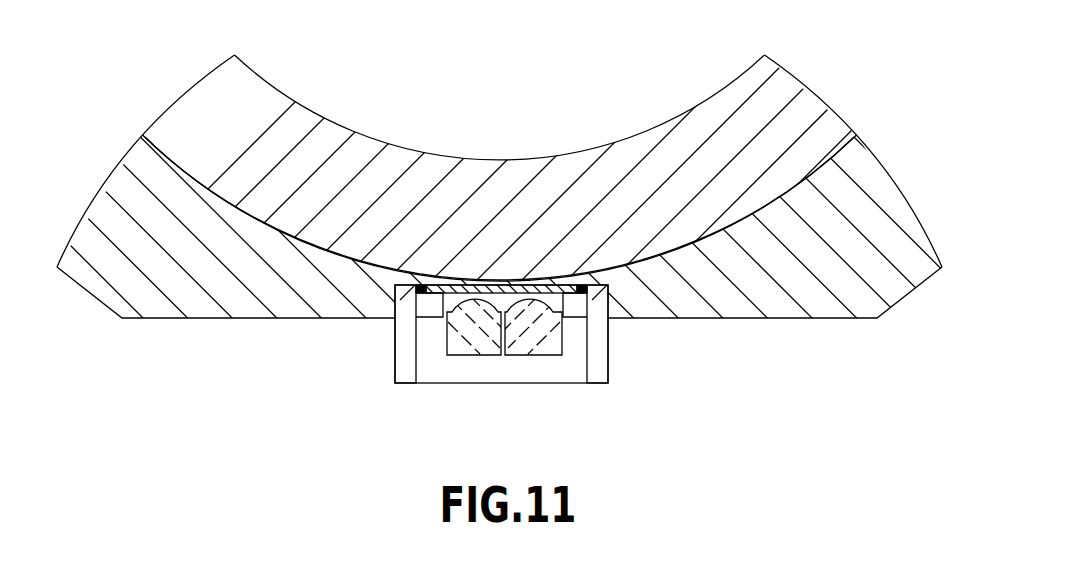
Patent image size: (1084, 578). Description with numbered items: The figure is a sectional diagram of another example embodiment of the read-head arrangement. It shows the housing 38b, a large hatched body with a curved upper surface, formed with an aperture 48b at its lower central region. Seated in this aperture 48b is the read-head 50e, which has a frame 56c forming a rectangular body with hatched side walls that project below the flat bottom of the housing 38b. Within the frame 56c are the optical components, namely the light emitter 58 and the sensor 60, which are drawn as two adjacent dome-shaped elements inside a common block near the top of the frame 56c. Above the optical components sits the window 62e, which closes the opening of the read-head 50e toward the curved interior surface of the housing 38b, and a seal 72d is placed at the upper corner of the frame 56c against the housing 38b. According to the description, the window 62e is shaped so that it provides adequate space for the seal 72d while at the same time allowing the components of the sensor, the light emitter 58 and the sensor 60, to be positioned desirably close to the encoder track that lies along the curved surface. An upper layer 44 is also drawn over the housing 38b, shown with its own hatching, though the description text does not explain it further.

The housing 38b is at (117, 305).
The outer cover layer 44 is at (299, 125).
The aperture 48b is at (434, 290).
The window 62e is at (507, 292).
The seal 72d is at (581, 291).
The read-head 50e is at (642, 216).
The frame 56c is at (608, 360).
The light emitter 58 is at (544, 351).
The sensor 60 is at (466, 351).